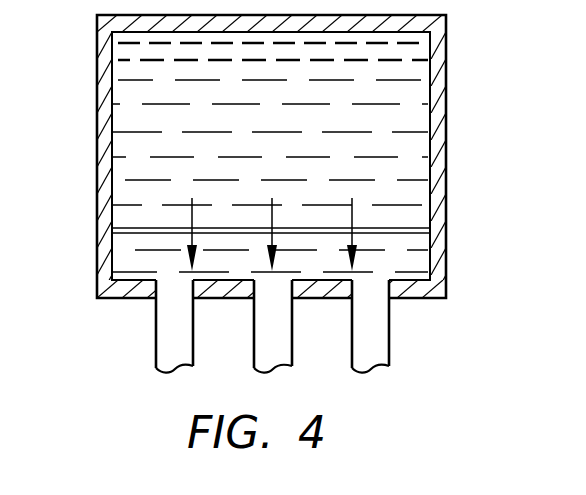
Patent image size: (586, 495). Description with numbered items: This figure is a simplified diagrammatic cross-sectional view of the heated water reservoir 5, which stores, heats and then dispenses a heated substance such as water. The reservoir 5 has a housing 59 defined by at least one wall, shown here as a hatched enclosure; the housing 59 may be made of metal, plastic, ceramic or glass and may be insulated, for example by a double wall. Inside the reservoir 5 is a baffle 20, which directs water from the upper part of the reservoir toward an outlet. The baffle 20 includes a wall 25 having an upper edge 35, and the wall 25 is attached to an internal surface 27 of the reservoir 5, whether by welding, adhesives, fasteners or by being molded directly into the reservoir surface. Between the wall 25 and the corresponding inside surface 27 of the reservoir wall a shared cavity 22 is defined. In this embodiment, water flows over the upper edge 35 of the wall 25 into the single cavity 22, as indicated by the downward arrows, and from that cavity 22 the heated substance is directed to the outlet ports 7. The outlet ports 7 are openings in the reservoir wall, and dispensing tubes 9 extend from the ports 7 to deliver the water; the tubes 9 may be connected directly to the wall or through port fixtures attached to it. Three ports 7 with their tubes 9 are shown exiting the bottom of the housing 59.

The heated water reservoir 5 is at (84, 111).
The housing 59 is at (458, 97).
The internal surface 27 is at (109, 144).
The cavity 22 is at (150, 262).
The wall 25 is at (375, 215).
The baffle 20 is at (404, 222).
The upper edge 35 is at (390, 230).
The outlet ports 7 is at (350, 302).
The dispensing tubes 9 is at (413, 363).